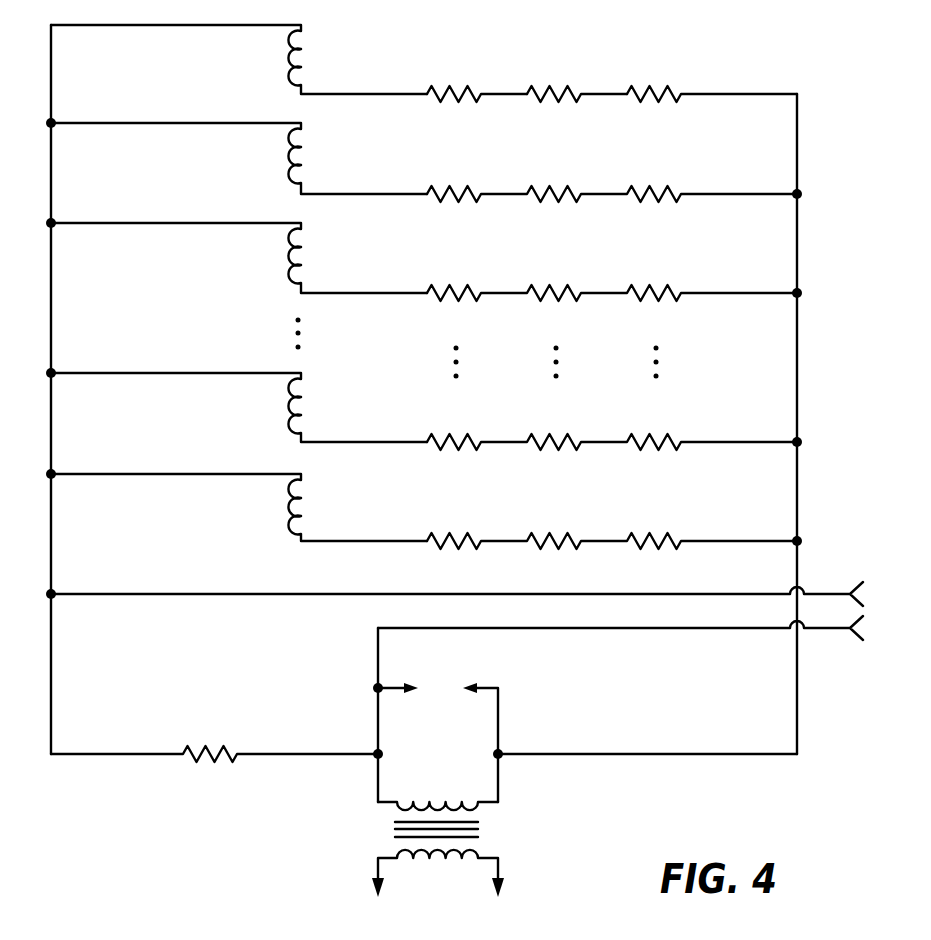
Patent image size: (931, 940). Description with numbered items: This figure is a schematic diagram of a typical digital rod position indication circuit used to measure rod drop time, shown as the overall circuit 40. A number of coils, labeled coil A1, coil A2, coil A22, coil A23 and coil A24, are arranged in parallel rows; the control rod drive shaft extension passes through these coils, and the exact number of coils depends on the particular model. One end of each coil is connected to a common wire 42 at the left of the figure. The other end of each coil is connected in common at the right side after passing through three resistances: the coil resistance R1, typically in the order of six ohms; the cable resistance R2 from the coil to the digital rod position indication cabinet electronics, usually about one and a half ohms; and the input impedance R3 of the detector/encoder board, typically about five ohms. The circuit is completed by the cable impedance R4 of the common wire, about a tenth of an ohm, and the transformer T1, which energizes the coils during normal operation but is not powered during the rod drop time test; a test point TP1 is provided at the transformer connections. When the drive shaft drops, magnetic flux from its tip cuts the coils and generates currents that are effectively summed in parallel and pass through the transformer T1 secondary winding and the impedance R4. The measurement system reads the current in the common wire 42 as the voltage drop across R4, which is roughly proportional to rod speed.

The common wire 42 is at (51, 85).
The transformer power supply circuit 40 is at (467, 766).
The coil A24 is at (239, 59).
The coil A23 is at (239, 158).
The coil A22 is at (239, 258).
The coil A2 is at (239, 407).
The coil A1 is at (239, 507).
The coil resistance R1 is at (477, 76).
The cable resistance R2 is at (577, 76).
The input impedance R3 is at (712, 76).
The cable impedance for the common wire R4 is at (214, 736).
The transformer T1 is at (438, 818).
The test point TP1 is at (477, 611).